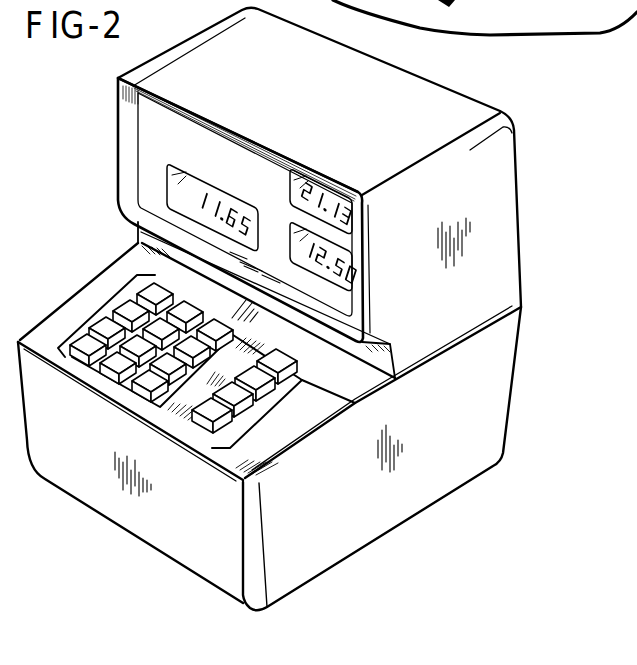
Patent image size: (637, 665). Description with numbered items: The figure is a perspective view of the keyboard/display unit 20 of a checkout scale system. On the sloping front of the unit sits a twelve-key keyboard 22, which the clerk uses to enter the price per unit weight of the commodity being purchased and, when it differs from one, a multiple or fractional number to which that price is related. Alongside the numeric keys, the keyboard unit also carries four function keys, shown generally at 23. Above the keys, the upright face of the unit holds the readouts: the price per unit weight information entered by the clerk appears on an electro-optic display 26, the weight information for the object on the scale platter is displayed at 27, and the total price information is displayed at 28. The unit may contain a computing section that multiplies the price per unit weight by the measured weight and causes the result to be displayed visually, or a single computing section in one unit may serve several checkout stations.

The keyboard/display unit 20 is at (543, 217).
The twelve-key keyboard 22 is at (112, 300).
The function keys 23 is at (259, 422).
The electro-optic display 26 is at (178, 190).
The weight display 27 is at (335, 281).
The total price display 28 is at (303, 184).